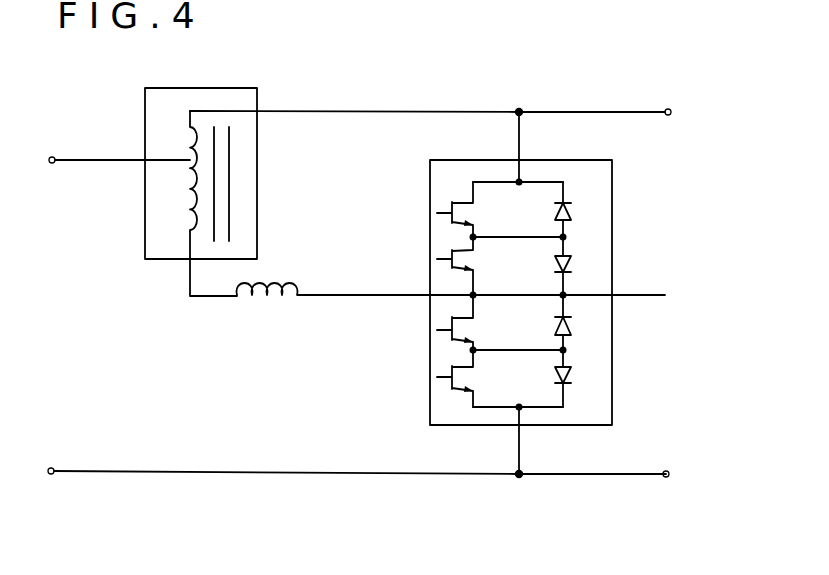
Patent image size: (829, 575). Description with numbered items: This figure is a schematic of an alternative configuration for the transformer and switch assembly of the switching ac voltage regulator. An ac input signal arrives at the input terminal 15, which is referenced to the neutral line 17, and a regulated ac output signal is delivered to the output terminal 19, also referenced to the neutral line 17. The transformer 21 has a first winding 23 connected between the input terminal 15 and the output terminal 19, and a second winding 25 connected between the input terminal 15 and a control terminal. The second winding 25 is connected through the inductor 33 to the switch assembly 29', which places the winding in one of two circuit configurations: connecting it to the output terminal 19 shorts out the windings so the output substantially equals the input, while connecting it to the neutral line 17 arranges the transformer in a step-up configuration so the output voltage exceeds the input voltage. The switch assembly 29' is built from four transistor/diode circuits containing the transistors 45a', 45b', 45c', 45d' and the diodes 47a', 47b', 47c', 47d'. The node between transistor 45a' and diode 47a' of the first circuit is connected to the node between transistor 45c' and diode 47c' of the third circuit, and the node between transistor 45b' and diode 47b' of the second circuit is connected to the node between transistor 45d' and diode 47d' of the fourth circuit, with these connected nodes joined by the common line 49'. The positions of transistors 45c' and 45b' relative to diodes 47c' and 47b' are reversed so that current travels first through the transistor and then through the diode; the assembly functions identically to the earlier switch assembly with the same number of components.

The input terminal 15 is at (53, 157).
The neutral line 17 is at (52, 467).
The output terminal 19 is at (670, 110).
The transformer 21 is at (192, 88).
The first winding 23 is at (192, 147).
The second winding 25 is at (190, 195).
The switch assembly 29' is at (521, 293).
The inductor 33 is at (263, 298).
The transistor 45a' is at (404, 266).
The transistor 45b' is at (396, 403).
The transistor 45c' is at (415, 190).
The transistor 45d' is at (413, 322).
The diode 47a' is at (627, 194).
The diode 47b' is at (608, 322).
The diode 47c' is at (616, 266).
The diode 47d' is at (632, 398).
The common line of the bridge 49' is at (521, 269).